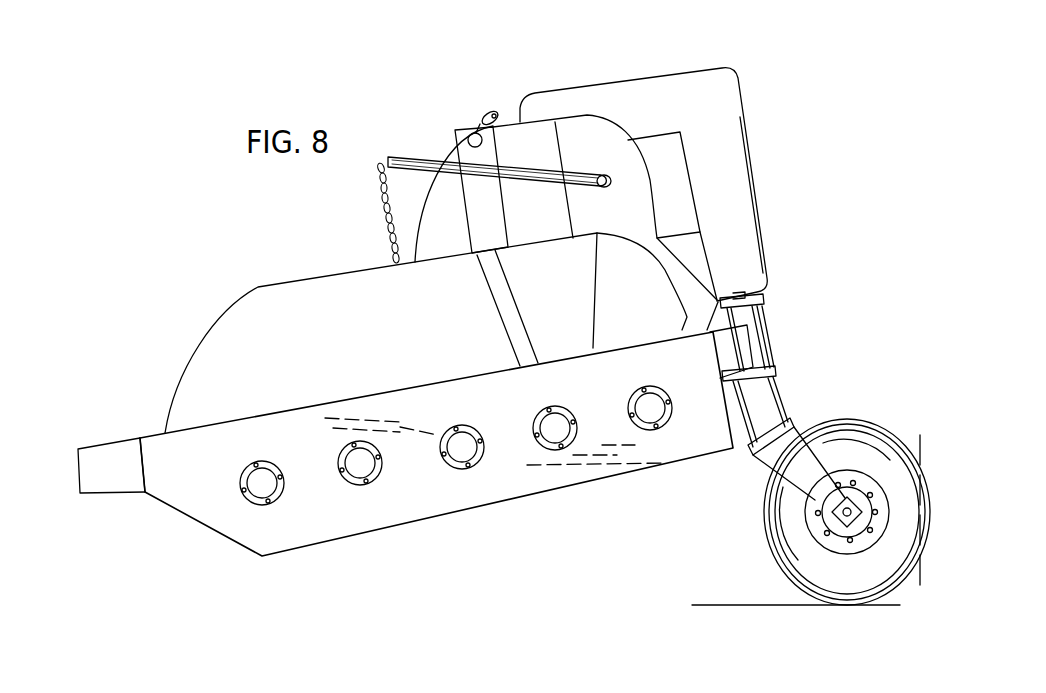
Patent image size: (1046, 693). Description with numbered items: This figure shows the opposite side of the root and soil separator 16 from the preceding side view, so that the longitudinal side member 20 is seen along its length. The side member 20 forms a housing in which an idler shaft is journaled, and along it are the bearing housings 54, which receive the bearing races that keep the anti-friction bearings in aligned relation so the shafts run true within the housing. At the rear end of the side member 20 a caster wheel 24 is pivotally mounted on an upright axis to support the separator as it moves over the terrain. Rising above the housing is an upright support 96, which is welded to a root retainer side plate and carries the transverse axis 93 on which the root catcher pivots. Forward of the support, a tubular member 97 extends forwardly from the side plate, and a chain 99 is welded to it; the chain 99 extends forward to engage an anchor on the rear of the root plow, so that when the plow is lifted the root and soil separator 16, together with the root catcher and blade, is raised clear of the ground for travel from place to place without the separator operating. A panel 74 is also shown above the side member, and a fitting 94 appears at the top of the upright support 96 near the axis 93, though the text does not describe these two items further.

The root and soil separator 16 is at (157, 426).
The longitudinal side member 20 is at (585, 482).
The caster wheel 24 is at (773, 497).
The bearing housing 54 is at (352, 462).
The hood panel 74 is at (745, 147).
The transverse axis 93 is at (493, 110).
The clevis 94 is at (484, 120).
The upright support 96 is at (478, 213).
The tubular member 97 is at (398, 157).
The chain 99 is at (376, 185).